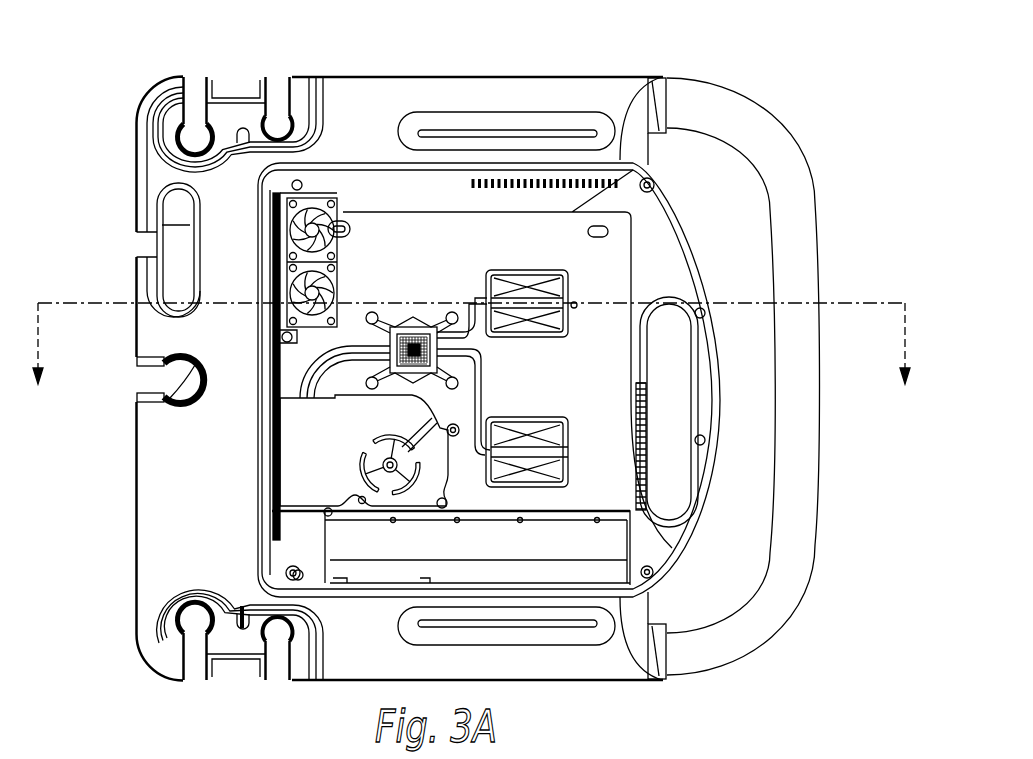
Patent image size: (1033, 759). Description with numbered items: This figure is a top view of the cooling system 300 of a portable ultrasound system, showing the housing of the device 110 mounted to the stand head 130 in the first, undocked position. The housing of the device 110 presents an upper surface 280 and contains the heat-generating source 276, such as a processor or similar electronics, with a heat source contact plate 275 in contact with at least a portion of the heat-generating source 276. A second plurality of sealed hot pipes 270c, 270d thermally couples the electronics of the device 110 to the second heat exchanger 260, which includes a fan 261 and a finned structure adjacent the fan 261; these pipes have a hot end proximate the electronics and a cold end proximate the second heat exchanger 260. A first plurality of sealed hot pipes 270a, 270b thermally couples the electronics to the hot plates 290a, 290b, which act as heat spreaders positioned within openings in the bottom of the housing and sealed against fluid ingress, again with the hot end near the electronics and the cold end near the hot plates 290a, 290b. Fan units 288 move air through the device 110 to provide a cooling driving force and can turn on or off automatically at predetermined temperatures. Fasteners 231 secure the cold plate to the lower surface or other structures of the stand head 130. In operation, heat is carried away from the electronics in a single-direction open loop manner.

The electronic device assembly 300 is at (474, 351).
The device 110 is at (513, 207).
The stand head 130 is at (667, 82).
The fan units 288 is at (342, 220).
The heat source contact plate 275 is at (430, 318).
The heat-generating source 276 is at (411, 327).
The upper surface 280 is at (480, 250).
The hot plate 290a is at (530, 433).
The hot plate 290b is at (530, 293).
The fasteners 231 is at (575, 306).
The first sealed hot pipe 270a is at (568, 452).
The first sealed hot pipe 270b is at (568, 283).
The second sealed hot pipe 270c is at (297, 391).
The second sealed hot pipe 270d is at (297, 377).
The second heat exchanger 260 is at (307, 480).
The fan 261 is at (362, 448).